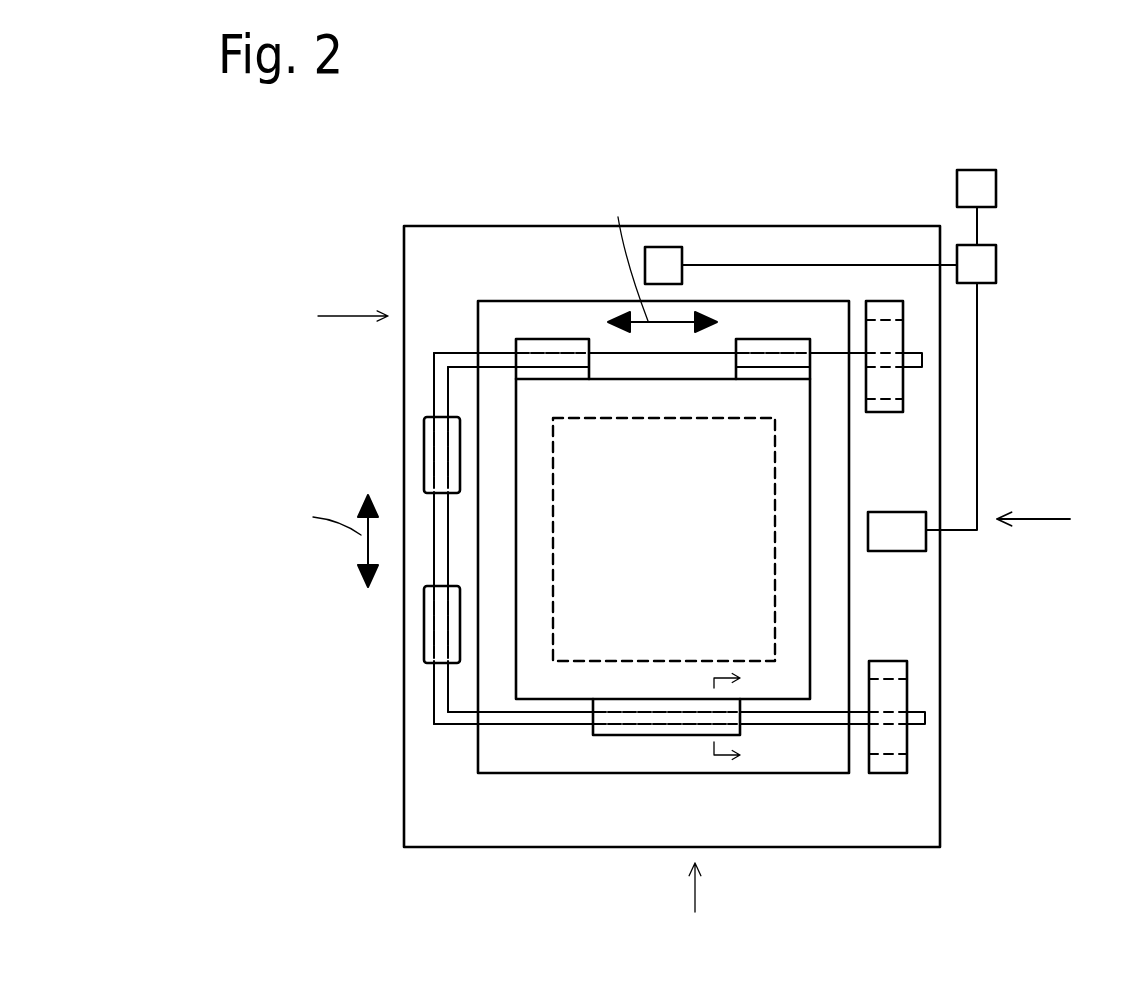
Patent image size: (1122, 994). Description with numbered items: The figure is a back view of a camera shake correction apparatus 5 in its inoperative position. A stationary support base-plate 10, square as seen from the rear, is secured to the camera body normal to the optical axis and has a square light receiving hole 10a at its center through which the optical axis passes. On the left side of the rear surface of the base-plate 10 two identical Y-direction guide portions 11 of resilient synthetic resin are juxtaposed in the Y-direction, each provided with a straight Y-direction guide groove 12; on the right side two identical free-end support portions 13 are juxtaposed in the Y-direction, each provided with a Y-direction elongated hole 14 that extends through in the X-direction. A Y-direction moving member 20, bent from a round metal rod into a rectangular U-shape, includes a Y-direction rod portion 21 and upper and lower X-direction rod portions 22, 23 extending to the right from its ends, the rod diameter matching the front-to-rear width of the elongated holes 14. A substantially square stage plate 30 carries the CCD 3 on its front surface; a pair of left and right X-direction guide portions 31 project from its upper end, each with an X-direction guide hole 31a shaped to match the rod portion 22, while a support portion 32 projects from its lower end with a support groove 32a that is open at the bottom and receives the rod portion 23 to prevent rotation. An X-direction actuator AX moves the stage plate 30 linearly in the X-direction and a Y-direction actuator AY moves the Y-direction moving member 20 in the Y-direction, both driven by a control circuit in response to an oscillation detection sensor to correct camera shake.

The CCD 3 is at (600, 640).
The positioning apparatus 5 is at (899, 207).
The stationary support base-plate 10 is at (729, 240).
The light receiving hole 10a is at (851, 633).
The Y-direction guide portion 11 is at (432, 450).
The Y-direction guide groove 12 is at (450, 428).
The free-end support portion 13 is at (892, 335).
The Y-direction elongated hole 14 is at (895, 383).
The Y-direction moving member 20 is at (533, 726).
The Y-direction rod portion 21 is at (432, 568).
The X-direction rod portion 22 is at (462, 352).
The X-direction rod portion 23 is at (808, 726).
The stage plate 30 is at (531, 388).
The X-direction guide portion 31 is at (545, 365).
The X-direction guide hole 31a is at (555, 362).
The support portion 32 is at (657, 737).
The support groove 32a is at (628, 703).
The X-direction actuator AX is at (900, 545).
The Y-direction actuator AY is at (657, 258).